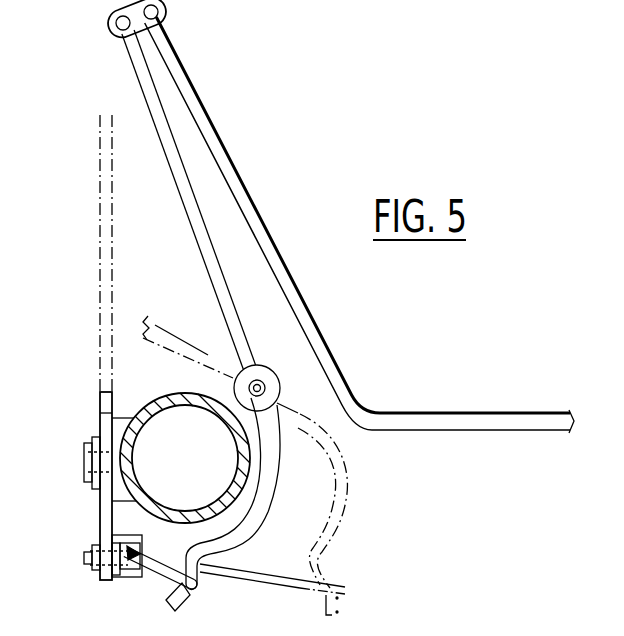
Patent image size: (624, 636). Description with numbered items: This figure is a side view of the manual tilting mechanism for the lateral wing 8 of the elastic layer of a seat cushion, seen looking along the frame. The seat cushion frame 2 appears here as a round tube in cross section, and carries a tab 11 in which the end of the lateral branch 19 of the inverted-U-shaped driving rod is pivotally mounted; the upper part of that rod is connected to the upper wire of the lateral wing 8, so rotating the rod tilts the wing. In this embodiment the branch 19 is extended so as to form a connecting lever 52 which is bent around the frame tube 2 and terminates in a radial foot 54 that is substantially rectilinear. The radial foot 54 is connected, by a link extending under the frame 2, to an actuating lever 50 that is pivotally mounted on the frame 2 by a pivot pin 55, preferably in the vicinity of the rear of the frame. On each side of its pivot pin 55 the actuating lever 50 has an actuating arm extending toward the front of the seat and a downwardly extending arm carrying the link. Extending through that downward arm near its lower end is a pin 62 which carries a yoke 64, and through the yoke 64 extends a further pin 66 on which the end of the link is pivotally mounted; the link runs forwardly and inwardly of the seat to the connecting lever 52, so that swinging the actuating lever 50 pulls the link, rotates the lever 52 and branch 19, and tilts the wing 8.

The seat cushion frame 2 is at (160, 408).
The lateral wing 8 is at (237, 177).
The tab 11 is at (278, 370).
The lateral branch 19 is at (190, 216).
The actuating lever 50 is at (100, 518).
The connecting lever 52 is at (265, 510).
The radial foot 54 is at (185, 598).
The pivot pin 55 is at (84, 460).
The pin 62 is at (84, 560).
The yoke 64 is at (118, 578).
The pin 66 is at (127, 578).